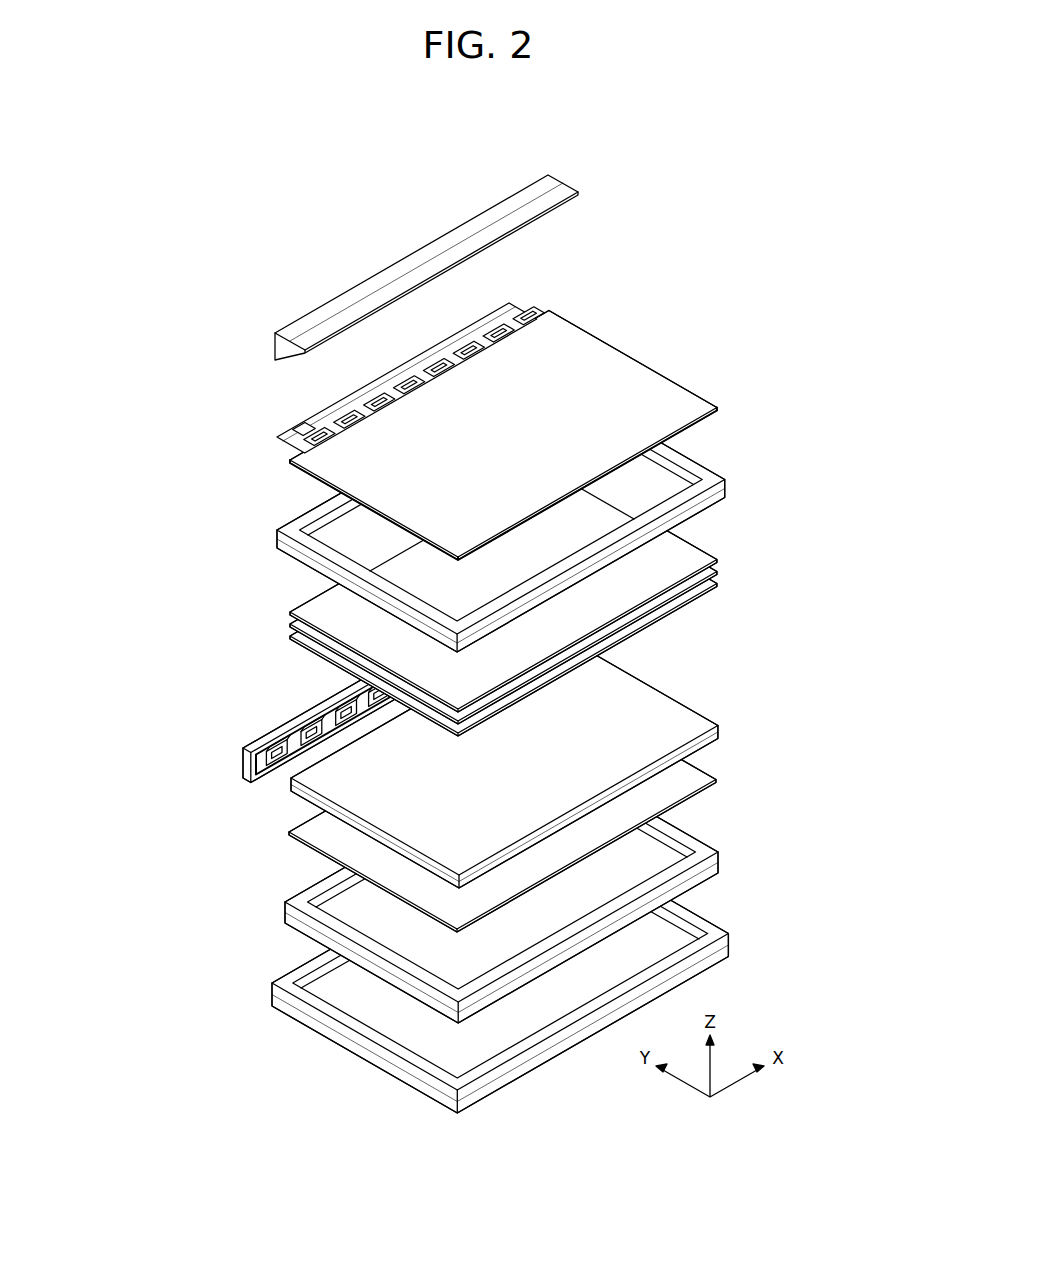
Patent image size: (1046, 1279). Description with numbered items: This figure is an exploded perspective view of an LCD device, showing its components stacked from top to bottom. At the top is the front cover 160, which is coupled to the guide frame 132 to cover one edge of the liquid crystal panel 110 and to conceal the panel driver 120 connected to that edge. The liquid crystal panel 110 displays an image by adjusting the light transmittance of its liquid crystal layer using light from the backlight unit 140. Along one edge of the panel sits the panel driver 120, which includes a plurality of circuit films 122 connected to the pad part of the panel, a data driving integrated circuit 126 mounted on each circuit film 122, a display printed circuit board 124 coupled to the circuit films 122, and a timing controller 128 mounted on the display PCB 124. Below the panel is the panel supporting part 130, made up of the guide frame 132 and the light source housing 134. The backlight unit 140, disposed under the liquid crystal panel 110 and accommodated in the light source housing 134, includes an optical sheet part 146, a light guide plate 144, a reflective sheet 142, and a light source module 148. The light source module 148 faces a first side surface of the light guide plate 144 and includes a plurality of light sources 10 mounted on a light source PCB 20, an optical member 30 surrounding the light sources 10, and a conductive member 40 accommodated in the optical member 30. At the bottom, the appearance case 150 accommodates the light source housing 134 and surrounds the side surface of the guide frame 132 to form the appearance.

The light sources 10 is at (278, 743).
The light source PCB 20 is at (265, 747).
The optical member 30 is at (320, 718).
The conductive member 40 is at (307, 723).
The liquid crystal panel 110 is at (622, 380).
The panel driver 120 is at (356, 390).
The circuit films 122 is at (285, 462).
The display printed circuit board 124 is at (323, 416).
The data driving integrated circuit 126 is at (307, 445).
The timing controller 128 is at (300, 430).
The panel supporting part 130 is at (463, 700).
The guide frame 132 is at (540, 514).
The light source housing 134 is at (708, 862).
The backlight unit 140 is at (397, 698).
The reflective sheet 142 is at (302, 837).
The light guide plate 144 is at (303, 793).
The optical sheet part 146 is at (421, 600).
The light source module 148 is at (258, 724).
The appearance case 150 is at (725, 945).
The front cover 160 is at (437, 250).